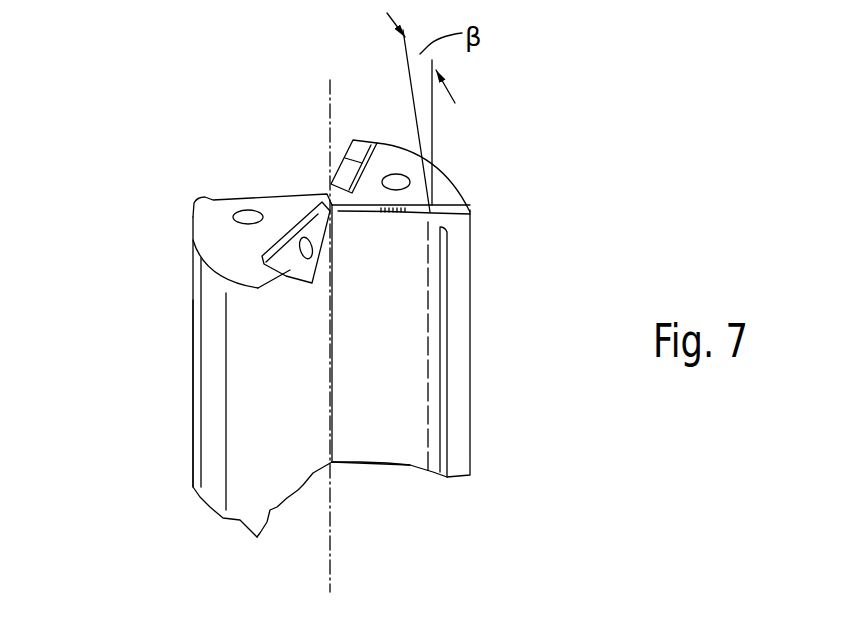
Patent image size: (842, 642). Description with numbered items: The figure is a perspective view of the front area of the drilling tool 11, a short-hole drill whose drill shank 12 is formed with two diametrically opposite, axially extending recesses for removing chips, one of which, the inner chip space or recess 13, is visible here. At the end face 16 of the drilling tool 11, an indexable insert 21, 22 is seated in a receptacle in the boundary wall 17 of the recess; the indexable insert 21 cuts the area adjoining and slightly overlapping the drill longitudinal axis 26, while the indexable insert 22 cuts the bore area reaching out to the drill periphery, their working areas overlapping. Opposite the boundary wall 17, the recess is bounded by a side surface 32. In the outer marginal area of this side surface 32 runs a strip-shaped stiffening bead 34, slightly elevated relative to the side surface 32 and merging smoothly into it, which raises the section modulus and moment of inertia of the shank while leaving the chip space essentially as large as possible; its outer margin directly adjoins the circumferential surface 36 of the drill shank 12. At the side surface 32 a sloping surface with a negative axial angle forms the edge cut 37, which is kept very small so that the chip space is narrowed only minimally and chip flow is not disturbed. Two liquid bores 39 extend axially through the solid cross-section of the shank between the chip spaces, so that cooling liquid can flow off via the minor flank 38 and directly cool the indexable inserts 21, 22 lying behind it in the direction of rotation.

The drilling tool 11 is at (155, 375).
The drill shank 12 is at (230, 477).
The recess 13 is at (362, 464).
The end face 16 is at (265, 135).
The boundary wall 17 is at (290, 463).
The indexable insert 21 is at (293, 276).
The indexable insert 22 is at (360, 140).
The drill longitudinal axis 26 is at (328, 137).
The side surface 32 is at (413, 443).
The stiffening bead 34 is at (455, 380).
The circumferential surface 36 is at (212, 440).
The edge cut 37 is at (447, 215).
The minor flank 38 is at (448, 194).
The liquid bore 39 is at (236, 217).